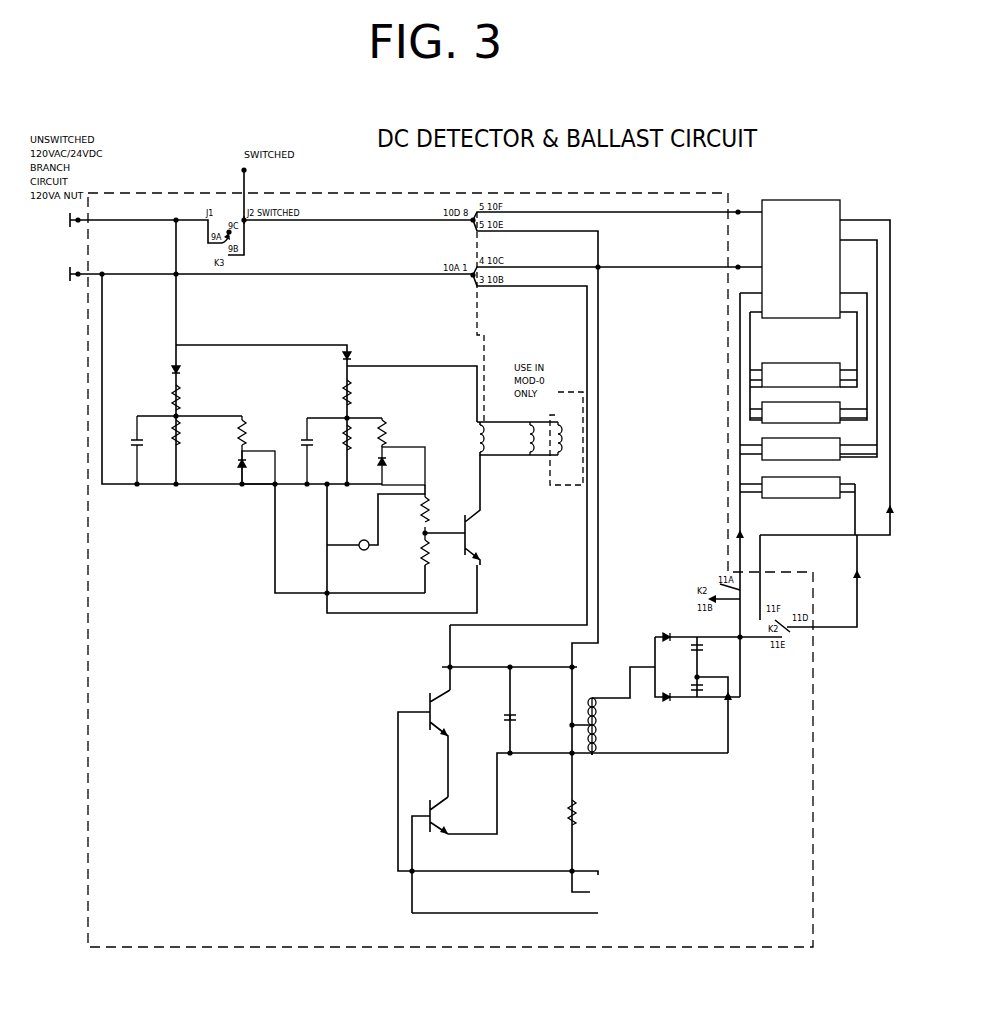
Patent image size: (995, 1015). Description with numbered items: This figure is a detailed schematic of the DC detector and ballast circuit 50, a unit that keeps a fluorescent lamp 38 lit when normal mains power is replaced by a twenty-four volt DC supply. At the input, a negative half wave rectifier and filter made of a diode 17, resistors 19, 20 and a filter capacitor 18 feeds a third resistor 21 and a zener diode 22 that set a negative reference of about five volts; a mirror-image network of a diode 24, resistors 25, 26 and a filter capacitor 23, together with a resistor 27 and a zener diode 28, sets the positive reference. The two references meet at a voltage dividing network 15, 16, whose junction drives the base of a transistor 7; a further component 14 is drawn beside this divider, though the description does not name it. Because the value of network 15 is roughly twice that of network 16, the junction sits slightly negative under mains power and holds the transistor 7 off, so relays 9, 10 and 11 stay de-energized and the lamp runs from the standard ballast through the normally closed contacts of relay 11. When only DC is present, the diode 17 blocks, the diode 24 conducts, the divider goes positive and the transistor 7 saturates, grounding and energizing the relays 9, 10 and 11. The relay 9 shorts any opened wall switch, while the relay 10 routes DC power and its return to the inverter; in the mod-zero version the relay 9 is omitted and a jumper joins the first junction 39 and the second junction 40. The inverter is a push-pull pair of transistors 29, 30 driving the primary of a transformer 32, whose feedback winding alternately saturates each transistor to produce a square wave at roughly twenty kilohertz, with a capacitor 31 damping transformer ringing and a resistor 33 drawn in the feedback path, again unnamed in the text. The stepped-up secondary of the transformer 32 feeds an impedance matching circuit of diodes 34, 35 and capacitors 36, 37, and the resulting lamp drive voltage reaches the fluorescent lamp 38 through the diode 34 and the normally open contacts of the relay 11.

The transistor 7 is at (492, 522).
The relay 9 is at (560, 458).
The relay 10 is at (480, 433).
The relay 11 is at (530, 452).
The resistor R8 14 is at (362, 550).
The voltage dividing network resistor 15 is at (425, 512).
The voltage dividing network resistor 16 is at (428, 565).
The diode 17 is at (176, 370).
The filter capacitor 18 is at (140, 450).
The resistor 19 is at (176, 393).
The resistor 20 is at (176, 445).
The third resistor 21 is at (243, 420).
The zener diode 22 is at (243, 466).
The filter capacitor 23 is at (307, 452).
The diode 24 is at (343, 360).
The resistor 25 is at (347, 392).
The resistor 26 is at (347, 436).
The resistor 27 is at (385, 420).
The zener diode 28 is at (382, 465).
The transistor 29 is at (428, 700).
The transistor 30 is at (428, 804).
The capacitor 31 is at (512, 716).
The transformer 32 is at (600, 742).
The resistor R10 33 is at (575, 830).
The diode 34 is at (664, 636).
The diode 35 is at (668, 700).
The capacitor 36 is at (700, 655).
The capacitor 37 is at (694, 685).
The fluorescent lamp 38 is at (785, 500).
The first junction 39 is at (208, 216).
The second junction 40 is at (250, 222).
The DC detector and ballast circuit 50 is at (644, 190).